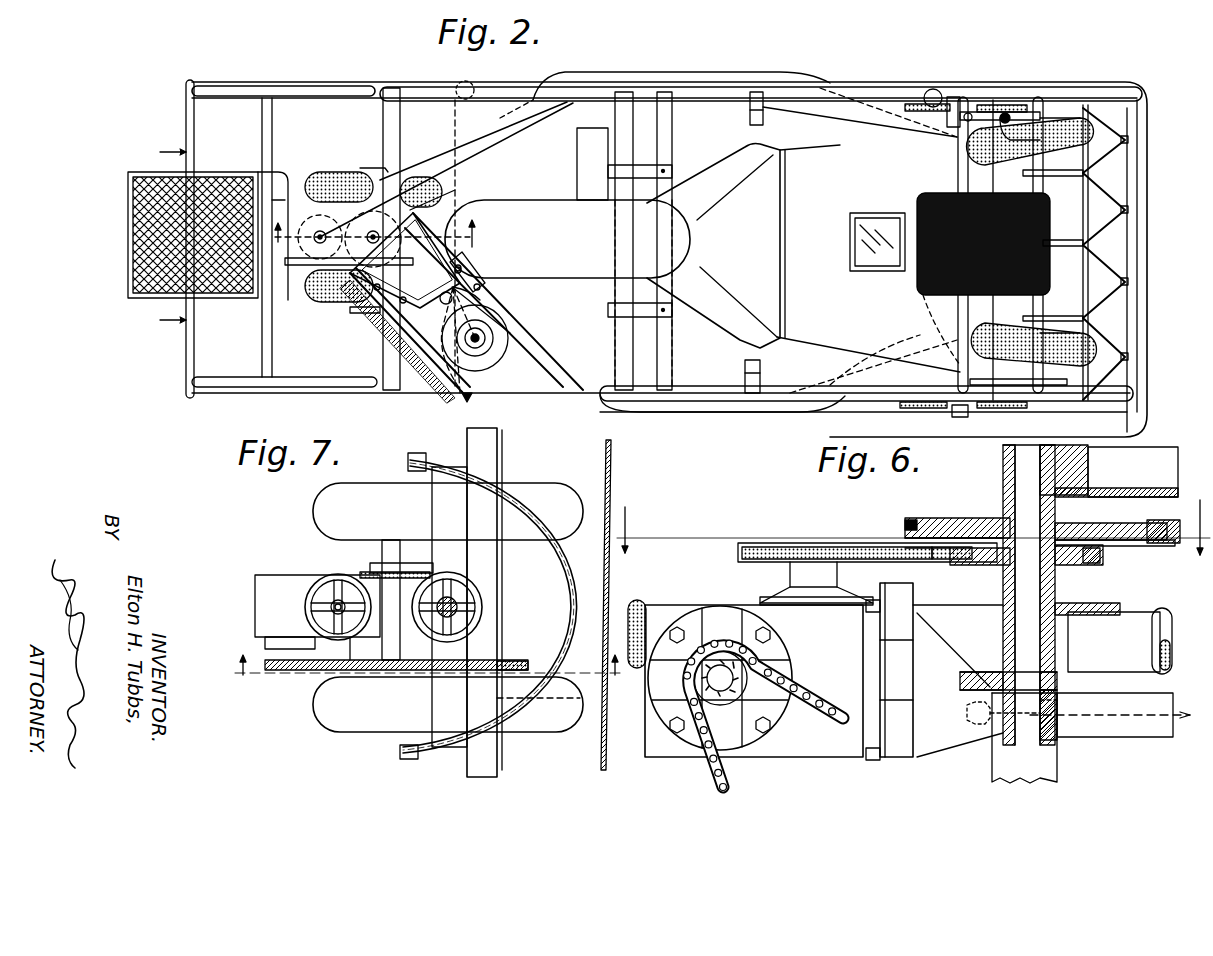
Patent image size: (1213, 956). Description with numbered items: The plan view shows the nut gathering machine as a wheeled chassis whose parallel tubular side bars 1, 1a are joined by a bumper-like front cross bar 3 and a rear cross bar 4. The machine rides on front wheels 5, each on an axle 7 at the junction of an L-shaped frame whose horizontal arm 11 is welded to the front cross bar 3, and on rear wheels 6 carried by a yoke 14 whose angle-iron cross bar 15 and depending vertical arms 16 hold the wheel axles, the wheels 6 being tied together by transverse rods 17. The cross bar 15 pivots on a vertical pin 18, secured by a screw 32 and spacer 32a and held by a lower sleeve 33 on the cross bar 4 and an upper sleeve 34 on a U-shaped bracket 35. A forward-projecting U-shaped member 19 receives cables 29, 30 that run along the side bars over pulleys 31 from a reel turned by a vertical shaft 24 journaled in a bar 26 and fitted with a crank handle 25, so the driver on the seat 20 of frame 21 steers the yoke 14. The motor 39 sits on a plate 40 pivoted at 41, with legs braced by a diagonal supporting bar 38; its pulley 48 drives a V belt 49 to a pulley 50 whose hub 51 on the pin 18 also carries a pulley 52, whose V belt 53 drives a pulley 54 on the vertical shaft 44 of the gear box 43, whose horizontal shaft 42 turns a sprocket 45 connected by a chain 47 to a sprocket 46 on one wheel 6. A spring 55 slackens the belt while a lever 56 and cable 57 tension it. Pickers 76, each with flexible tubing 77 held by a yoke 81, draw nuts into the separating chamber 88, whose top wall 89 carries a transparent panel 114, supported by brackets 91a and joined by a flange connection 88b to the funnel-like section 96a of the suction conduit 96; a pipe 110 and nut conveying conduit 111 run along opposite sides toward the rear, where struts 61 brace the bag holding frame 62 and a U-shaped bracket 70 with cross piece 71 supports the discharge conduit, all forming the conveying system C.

In FIG. 2, the side bar 1 is at (862, 100).
In FIG. 6, the side bar 1 is at (1160, 612).
In FIG. 2, the side bar 1a is at (812, 400).
In FIG. 2, the front cross bar 3 is at (1147, 82).
In FIG. 2, the rear cross bar 4 is at (392, 88).
In FIG. 7, the rear cross bar 4 is at (497, 440).
In FIG. 6, the rear cross bar 4 is at (1114, 627).
In FIG. 2, the front wheel 5 is at (915, 104).
In FIG. 2, the rear wheel 6 is at (318, 162).
In FIG. 7, the rear wheel 6 is at (545, 540).
In FIG. 6, the axle 7 is at (913, 519).
In FIG. 2, the horizontal arm 11 is at (1085, 87).
In FIG. 2, the yoke 14 is at (340, 172).
In FIG. 7, the yoke 14 is at (432, 505).
In FIG. 6, the yoke 14 is at (995, 672).
In FIG. 7, the cross bar 15 is at (445, 698).
In FIG. 6, the cross bar 15 is at (1068, 660).
In FIG. 7, the vertical arm 16 is at (419, 684).
In FIG. 6, the vertical arm 16 is at (1035, 768).
In FIG. 2, the transverse rod 17 is at (161, 236).
In FIG. 6, the vertical pin 18 is at (1015, 460).
In FIG. 2, the U-shaped member 19 is at (362, 310).
In FIG. 7, the U-shaped member 19 is at (528, 490).
In FIG. 6, the U-shaped member 19 is at (1160, 737).
In FIG. 2, the driver's seat 20 is at (955, 178).
In FIG. 2, the frame 21 is at (958, 150).
In FIG. 2, the vertical shaft 24 is at (1006, 112).
In FIG. 2, the crank handle 25 is at (980, 105).
In FIG. 2, the bar 26 is at (1035, 120).
In FIG. 2, the cable 29 is at (838, 98).
In FIG. 7, the cable 29 is at (604, 470).
In FIG. 2, the cable 30 is at (840, 400).
In FIG. 7, the cable 30 is at (601, 758).
In FIG. 2, the pulley 31 is at (464, 83).
In FIG. 6, the securing screw 32 is at (1060, 713).
In FIG. 6, the spacer 32a is at (1057, 735).
In FIG. 6, the lower sleeve 33 is at (1060, 598).
In FIG. 6, the upper sleeve 34 is at (1060, 468).
In FIG. 6, the U-shaped bracket 35 is at (1117, 506).
In FIG. 2, the supporting bar 38 is at (543, 330).
In FIG. 2, the propulsion motor 39 is at (488, 315).
In FIG. 2, the horizontal plate 40 is at (512, 320).
In FIG. 2, the pivot 41 is at (478, 278).
In FIG. 6, the horizontal shaft 42 is at (725, 675).
In FIG. 7, the gear box 43 is at (255, 610).
In FIG. 6, the gear box 43 is at (792, 757).
In FIG. 7, the vertical shaft 44 is at (305, 607).
In FIG. 7, the sprocket 45 is at (277, 670).
In FIG. 6, the sprocket 45 is at (770, 672).
In FIG. 7, the sprocket 46 is at (515, 670).
In FIG. 2, the chain 47 is at (305, 265).
In FIG. 7, the chain 47 is at (356, 670).
In FIG. 6, the chain 47 is at (815, 700).
In FIG. 2, the pulley 48 is at (495, 350).
In FIG. 2, the V belt 49 is at (405, 260).
In FIG. 6, the V belt 49 is at (905, 524).
In FIG. 2, the pulley 50 is at (440, 200).
In FIG. 6, the pulley 50 is at (955, 518).
In FIG. 6, the hub 51 is at (1003, 502).
In FIG. 7, the pulley 52 is at (446, 572).
In FIG. 6, the pulley 52 is at (978, 565).
In FIG. 7, the V belt 53 is at (358, 572).
In FIG. 6, the V belt 53 is at (945, 560).
In FIG. 7, the pulley 54 is at (330, 574).
In FIG. 6, the pulley 54 is at (752, 562).
In FIG. 2, the spiral spring 55 is at (405, 335).
In FIG. 2, the lever 56 is at (1052, 386).
In FIG. 2, the cable 57 is at (925, 408).
In FIG. 2, the reinforcing strut 61 is at (235, 86).
In FIG. 2, the bag holding frame 62 is at (228, 177).
In FIG. 2, the U-shaped bracket 70 is at (276, 180).
In FIG. 2, the cross piece 71 is at (291, 200).
In FIG. 2, the picker 76 is at (1075, 158).
In FIG. 2, the flexible tubing 77 is at (1083, 243).
In FIG. 2, the yoke 81 is at (1118, 185).
In FIG. 2, the separating chamber 88 is at (810, 152).
In FIG. 2, the flange connection 88b is at (785, 243).
In FIG. 2, the top wall 89 is at (834, 243).
In FIG. 2, the bracket 91a is at (763, 118).
In FIG. 2, the suction conduit 96 is at (567, 241).
In FIG. 2, the funnel-like section 96a is at (716, 245).
In FIG. 2, the pipe 110 is at (748, 412).
In FIG. 2, the nut conveying conduit 111 is at (762, 72).
In FIG. 2, the transparent panel 114 is at (855, 262).
In FIG. 2, the conveyor C is at (848, 98).